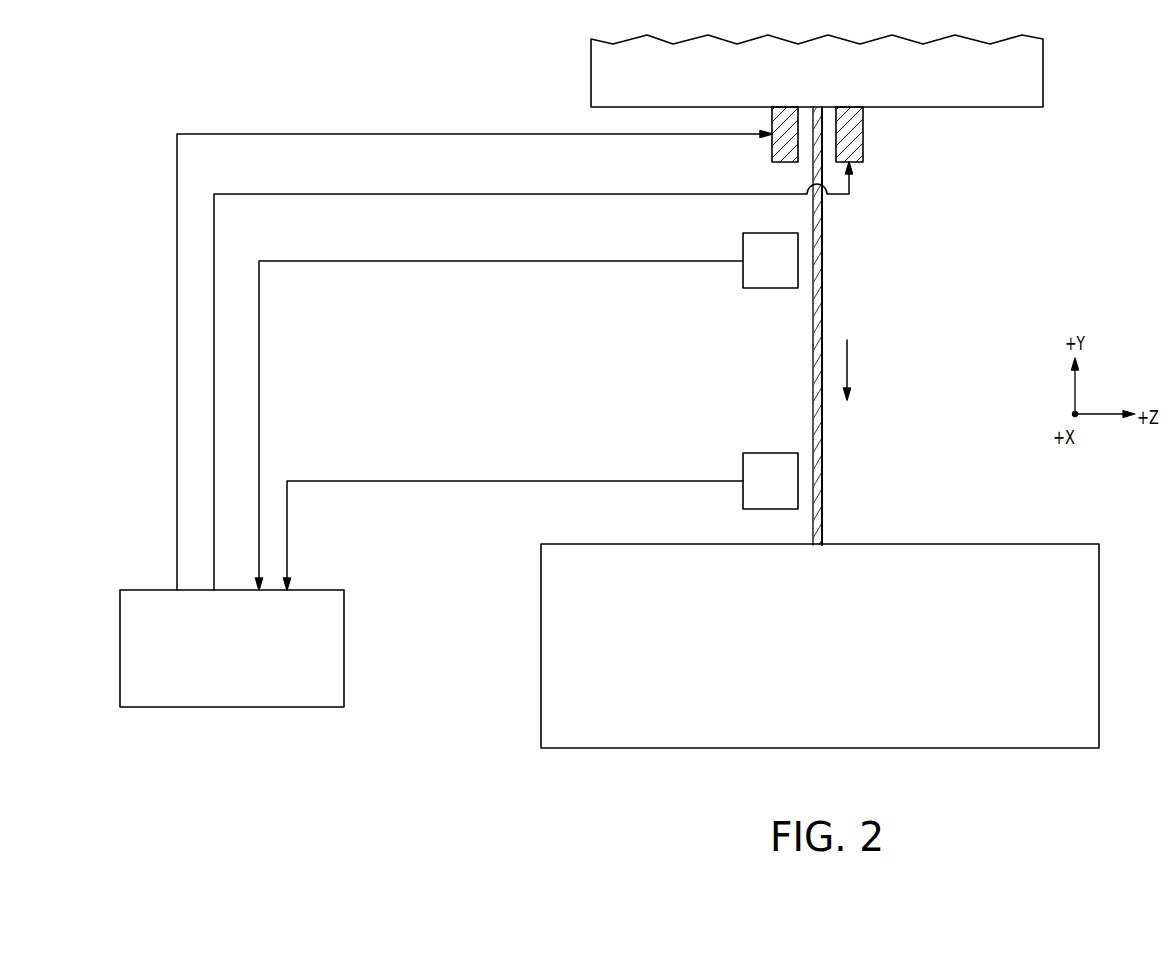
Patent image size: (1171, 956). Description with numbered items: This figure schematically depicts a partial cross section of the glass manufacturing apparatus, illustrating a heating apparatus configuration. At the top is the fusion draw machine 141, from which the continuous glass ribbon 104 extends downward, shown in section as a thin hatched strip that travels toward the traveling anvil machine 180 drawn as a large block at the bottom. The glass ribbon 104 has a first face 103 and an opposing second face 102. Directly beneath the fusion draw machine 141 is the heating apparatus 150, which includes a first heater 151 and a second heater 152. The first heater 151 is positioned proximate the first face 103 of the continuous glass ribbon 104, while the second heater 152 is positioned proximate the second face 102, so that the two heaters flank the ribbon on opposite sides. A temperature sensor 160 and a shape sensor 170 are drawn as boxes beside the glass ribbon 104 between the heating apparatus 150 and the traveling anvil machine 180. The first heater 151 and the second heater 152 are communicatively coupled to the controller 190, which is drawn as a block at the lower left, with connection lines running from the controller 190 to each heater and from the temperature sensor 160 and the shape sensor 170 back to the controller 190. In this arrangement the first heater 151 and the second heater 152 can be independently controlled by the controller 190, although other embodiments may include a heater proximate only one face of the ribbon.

The second face 102 is at (822, 437).
The first face 103 is at (813, 385).
The continuous glass ribbon 104 is at (800, 330).
The fusion draw machine 141 is at (591, 90).
The heating apparatus 150 is at (851, 155).
The first heater 151 is at (772, 152).
The second heater 152 is at (863, 137).
The temperature sensor 160 is at (743, 240).
The shape sensor 170 is at (743, 462).
The traveling anvil machine 180 is at (922, 544).
The controller 190 is at (147, 590).